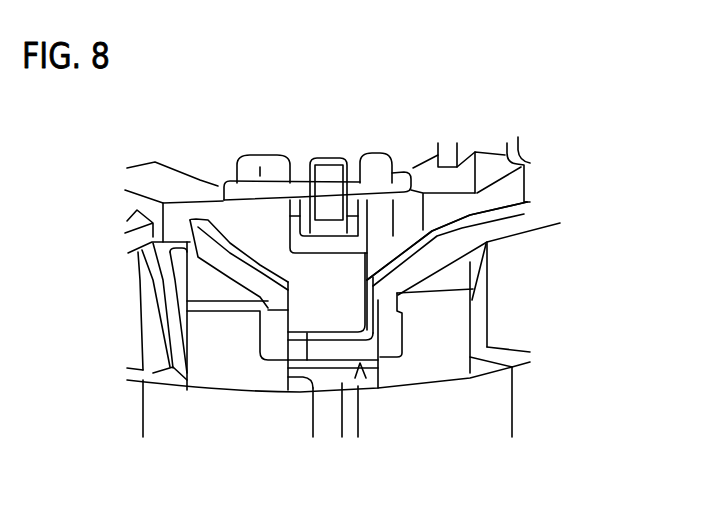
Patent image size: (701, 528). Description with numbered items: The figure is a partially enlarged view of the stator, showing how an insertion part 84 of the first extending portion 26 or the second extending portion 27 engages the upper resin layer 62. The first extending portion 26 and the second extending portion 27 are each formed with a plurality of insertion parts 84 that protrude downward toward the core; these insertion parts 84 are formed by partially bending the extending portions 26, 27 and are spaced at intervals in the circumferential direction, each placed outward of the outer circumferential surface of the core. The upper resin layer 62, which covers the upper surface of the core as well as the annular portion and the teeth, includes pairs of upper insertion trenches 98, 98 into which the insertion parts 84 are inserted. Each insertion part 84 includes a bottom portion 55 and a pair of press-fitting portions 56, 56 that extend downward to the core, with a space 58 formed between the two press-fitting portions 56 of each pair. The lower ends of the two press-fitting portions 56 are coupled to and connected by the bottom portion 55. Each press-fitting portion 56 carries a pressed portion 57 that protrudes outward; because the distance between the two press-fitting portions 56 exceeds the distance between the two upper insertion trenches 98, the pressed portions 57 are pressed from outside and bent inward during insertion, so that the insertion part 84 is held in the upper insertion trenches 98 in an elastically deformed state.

The space 58 is at (329, 303).
The pressed portion 57 is at (262, 346).
The press-fitting portion 56 is at (400, 313).
The first extending portion 26 is at (432, 265).
The second extending portion 27 is at (447, 241).
The upper resin layer 62 is at (214, 386).
The bottom portion 55 is at (322, 342).
The insertion part 84 is at (360, 365).
The upper insertion trench 98 is at (312, 382).